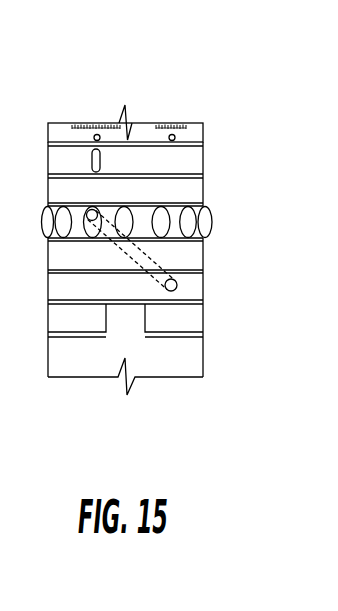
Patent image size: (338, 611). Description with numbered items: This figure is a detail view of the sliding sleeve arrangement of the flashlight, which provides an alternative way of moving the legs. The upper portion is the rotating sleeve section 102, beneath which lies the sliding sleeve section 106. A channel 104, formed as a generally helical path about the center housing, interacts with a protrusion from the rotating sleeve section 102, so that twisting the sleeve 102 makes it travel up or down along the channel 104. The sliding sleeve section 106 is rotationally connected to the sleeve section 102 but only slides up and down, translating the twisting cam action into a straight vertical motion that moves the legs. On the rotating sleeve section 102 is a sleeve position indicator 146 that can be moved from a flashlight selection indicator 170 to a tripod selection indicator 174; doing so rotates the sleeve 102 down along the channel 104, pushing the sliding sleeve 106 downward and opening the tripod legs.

The rotating sleeve section 102 is at (150, 180).
The sliding sleeve section 106 is at (105, 288).
The channel 104 is at (112, 212).
The flashlight selection indicator 170 is at (97, 134).
The tripod selection indicator 174 is at (175, 134).
The sleeve position indicator 146 is at (91, 152).